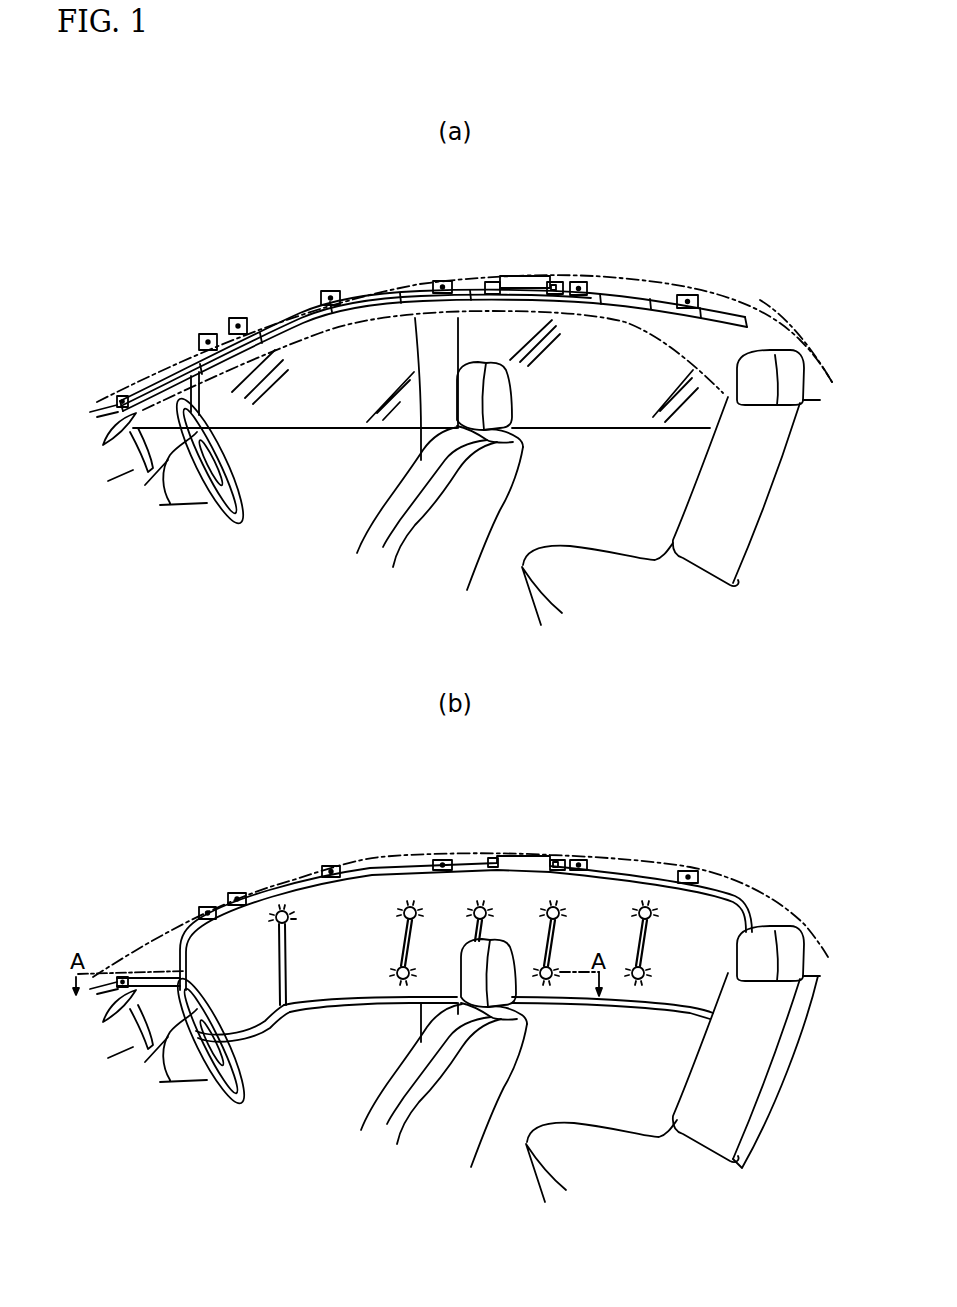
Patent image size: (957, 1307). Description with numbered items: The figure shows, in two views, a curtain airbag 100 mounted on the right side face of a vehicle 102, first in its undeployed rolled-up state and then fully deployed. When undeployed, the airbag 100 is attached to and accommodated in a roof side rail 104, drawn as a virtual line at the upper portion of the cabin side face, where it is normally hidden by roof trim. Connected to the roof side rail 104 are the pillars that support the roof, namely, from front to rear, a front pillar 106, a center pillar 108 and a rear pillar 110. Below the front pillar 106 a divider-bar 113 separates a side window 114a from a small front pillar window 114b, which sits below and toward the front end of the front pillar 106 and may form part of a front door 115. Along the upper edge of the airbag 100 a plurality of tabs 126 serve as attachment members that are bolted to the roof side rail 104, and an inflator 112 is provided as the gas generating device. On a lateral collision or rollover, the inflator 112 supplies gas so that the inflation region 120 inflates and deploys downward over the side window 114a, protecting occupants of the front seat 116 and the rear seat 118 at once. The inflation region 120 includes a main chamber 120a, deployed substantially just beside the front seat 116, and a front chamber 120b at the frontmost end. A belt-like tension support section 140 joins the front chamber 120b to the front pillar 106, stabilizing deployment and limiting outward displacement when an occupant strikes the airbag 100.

The curtain airbag 100 is at (637, 290).
The vehicle 102 is at (215, 314).
The roof side rail 104 is at (368, 295).
The front pillar 106 is at (168, 357).
The center pillar 108 is at (453, 342).
The rear pillar 110 is at (780, 343).
The inflator 112 is at (548, 282).
The divider-bar 113 is at (200, 393).
The side window 114a is at (308, 366).
The front pillar window 114b is at (148, 749).
The front door 115 is at (297, 462).
The front seat 116 is at (500, 478).
The rear seat 118 is at (758, 473).
The inflation region 120 is at (418, 880).
The main chamber 120a is at (365, 988).
The front chamber 120b is at (250, 975).
The tabs 126 is at (329, 291).
The tension support section 140 is at (150, 381).